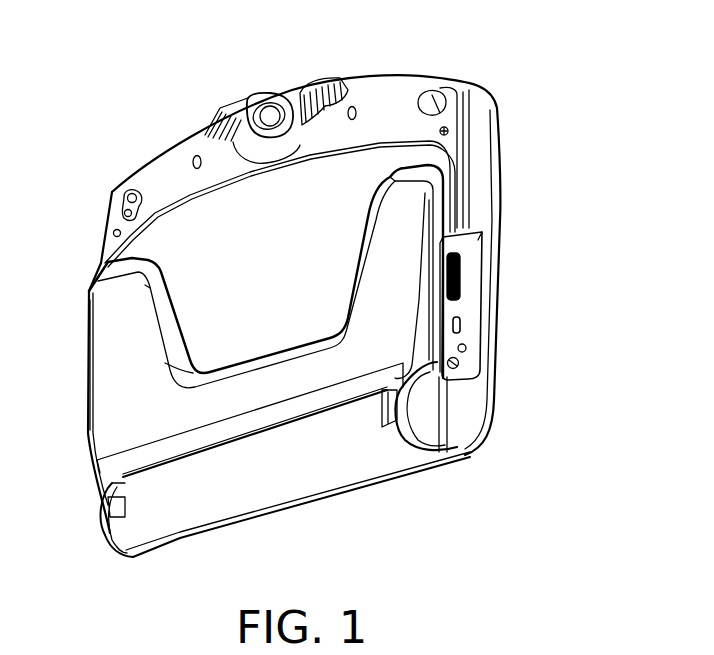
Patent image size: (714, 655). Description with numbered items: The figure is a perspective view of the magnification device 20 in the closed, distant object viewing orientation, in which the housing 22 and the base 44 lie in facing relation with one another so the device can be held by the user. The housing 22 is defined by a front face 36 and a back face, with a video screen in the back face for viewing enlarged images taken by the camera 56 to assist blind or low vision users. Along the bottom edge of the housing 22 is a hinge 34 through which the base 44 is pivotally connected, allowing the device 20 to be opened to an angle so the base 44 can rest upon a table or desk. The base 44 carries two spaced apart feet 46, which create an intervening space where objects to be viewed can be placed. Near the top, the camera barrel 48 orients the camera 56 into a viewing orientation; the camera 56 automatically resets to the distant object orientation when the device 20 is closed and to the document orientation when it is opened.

The magnification device 20 is at (503, 104).
The housing 22 is at (470, 415).
The hinge 34 is at (117, 504).
The front face 36 is at (282, 270).
The base 44 is at (118, 418).
The feet 46 is at (120, 329).
The camera barrel 48 is at (320, 117).
The camera 56 is at (270, 114).